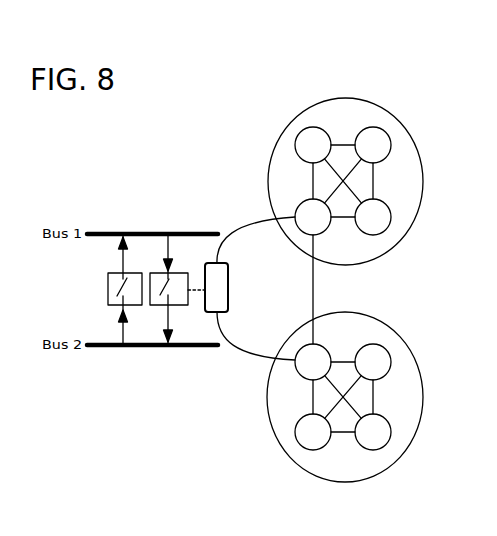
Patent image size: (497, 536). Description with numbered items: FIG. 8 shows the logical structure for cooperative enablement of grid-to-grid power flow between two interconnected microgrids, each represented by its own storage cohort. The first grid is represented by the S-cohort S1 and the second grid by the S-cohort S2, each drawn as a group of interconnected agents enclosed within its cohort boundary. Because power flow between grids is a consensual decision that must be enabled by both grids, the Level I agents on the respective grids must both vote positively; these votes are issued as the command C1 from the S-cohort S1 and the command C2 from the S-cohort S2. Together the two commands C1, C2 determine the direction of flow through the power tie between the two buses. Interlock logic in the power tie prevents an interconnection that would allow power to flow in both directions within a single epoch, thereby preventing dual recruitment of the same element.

The command C1 is at (256, 231).
The command C2 is at (256, 336).
The S-cohort S1 is at (345, 165).
The S-cohort S2 is at (345, 416).